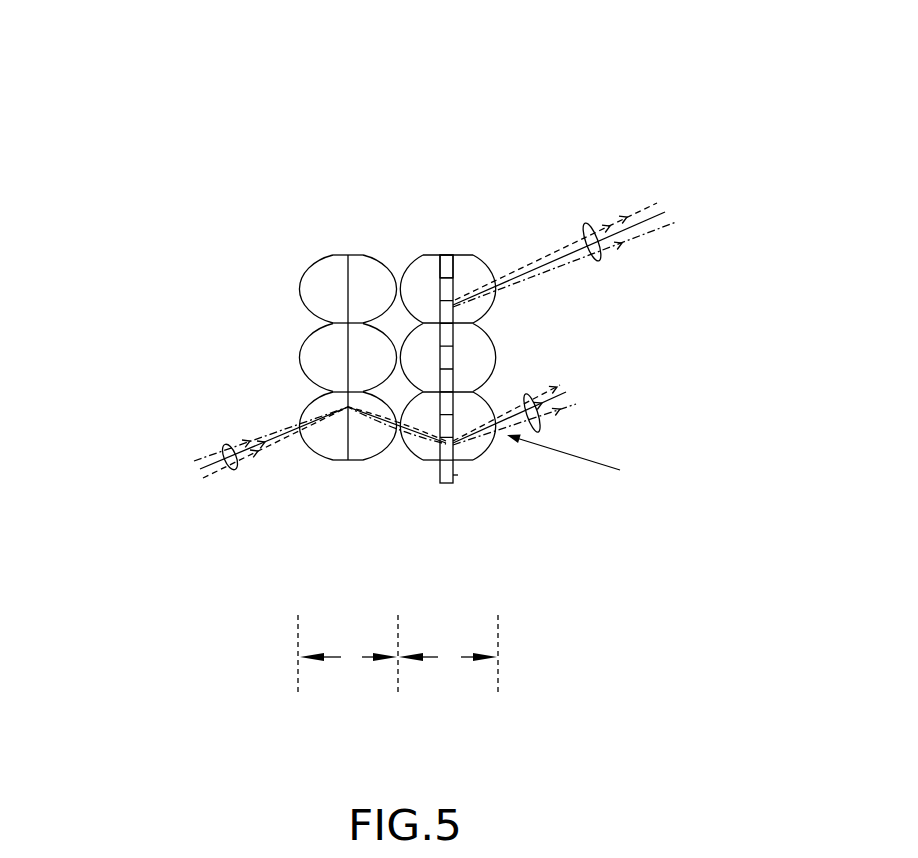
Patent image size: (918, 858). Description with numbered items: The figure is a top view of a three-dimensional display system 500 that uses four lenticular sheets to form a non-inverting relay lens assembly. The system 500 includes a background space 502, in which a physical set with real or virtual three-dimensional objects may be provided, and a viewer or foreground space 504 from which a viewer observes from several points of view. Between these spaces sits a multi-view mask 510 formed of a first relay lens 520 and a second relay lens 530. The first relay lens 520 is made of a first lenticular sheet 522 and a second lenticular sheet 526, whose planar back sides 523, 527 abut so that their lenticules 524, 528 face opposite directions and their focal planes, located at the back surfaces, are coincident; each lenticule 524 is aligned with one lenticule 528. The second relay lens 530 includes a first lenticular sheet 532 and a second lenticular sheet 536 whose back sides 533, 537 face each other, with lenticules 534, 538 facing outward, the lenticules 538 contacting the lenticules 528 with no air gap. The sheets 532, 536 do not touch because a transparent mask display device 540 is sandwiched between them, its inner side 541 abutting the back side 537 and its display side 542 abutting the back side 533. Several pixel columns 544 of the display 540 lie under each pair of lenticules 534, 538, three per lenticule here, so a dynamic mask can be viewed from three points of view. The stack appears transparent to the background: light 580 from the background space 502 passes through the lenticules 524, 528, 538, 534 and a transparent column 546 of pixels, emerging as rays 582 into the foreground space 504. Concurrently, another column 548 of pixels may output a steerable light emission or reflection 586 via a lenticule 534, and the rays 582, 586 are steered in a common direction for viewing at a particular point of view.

The 3D display system 500 is at (90, 217).
The background space 502 is at (88, 358).
The viewer or foreground space 504 is at (637, 74).
The multi-view mask 510 is at (402, 112).
The first relay lens 520 is at (316, 503).
The first lenticular sheet 522 is at (292, 462).
The back side 523 is at (346, 462).
The lenticules 524 is at (297, 390).
The second lenticular sheet 526 is at (369, 480).
The back side 527 is at (341, 262).
The lenticules 528 is at (392, 267).
The second relay lens 530 is at (486, 518).
The first lenticular sheet 532 is at (506, 240).
The back side 533 is at (447, 256).
The lenticules 534 is at (465, 323).
The second lenticular sheet 536 is at (433, 500).
The back side 537 is at (439, 277).
The lenticules 538 is at (384, 325).
The transparent mask display device 540 is at (464, 515).
The back or inner side 541 is at (438, 472).
The front or display side 542 is at (458, 476).
The pixels or columns of pixels 544 is at (458, 352).
The column of pixels 546 is at (486, 457).
The column of pixels 548 is at (467, 293).
The light 580 is at (226, 452).
The arrows 582 is at (540, 420).
The steerable light emission 586 is at (600, 258).